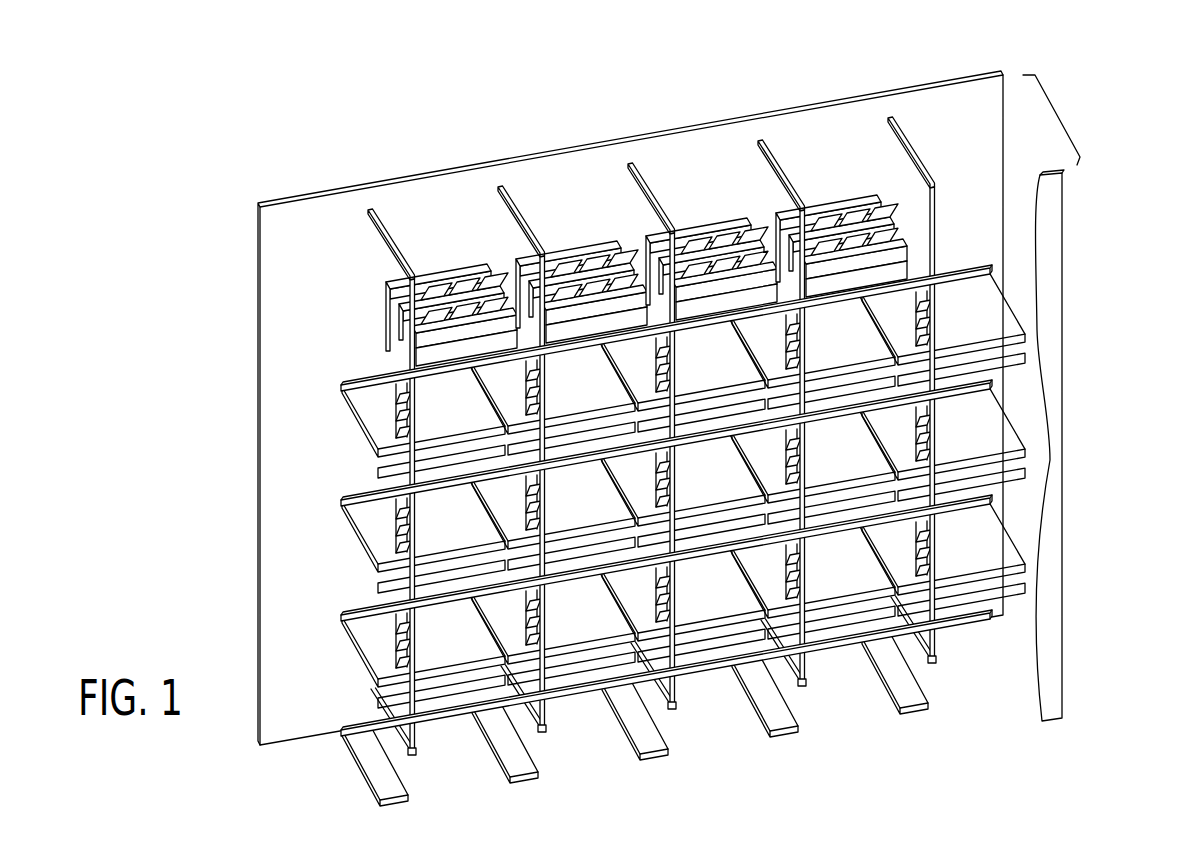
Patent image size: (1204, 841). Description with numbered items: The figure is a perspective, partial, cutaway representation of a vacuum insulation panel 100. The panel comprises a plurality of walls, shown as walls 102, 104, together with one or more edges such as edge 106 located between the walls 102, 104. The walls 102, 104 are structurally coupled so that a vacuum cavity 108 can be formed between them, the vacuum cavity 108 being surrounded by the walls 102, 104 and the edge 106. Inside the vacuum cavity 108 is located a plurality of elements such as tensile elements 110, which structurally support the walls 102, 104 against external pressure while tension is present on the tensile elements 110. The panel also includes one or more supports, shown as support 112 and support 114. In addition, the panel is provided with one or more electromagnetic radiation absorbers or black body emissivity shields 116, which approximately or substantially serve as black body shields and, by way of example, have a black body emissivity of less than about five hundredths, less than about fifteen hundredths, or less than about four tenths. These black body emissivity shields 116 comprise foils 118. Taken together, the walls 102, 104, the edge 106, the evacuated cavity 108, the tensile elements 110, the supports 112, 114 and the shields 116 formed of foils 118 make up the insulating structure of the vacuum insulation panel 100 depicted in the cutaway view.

The vacuum insulation panel 100 is at (943, 24).
The wall 102 is at (333, 213).
The wall 104 is at (1053, 652).
The edge 106 is at (1058, 113).
The vacuum cavity 108 is at (318, 759).
The tensile elements 110 is at (928, 207).
The support 112 is at (527, 217).
The support 114 is at (362, 419).
The black body emissivity shields 116 is at (827, 196).
The foils 118 is at (857, 233).